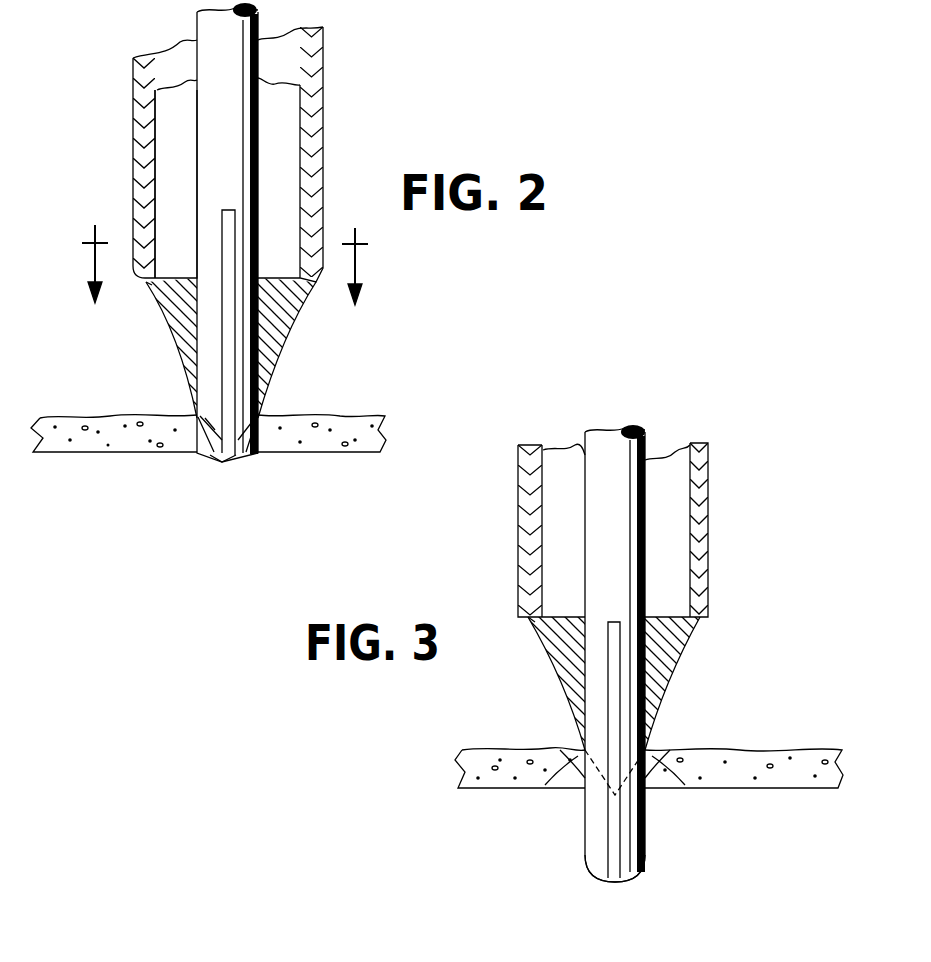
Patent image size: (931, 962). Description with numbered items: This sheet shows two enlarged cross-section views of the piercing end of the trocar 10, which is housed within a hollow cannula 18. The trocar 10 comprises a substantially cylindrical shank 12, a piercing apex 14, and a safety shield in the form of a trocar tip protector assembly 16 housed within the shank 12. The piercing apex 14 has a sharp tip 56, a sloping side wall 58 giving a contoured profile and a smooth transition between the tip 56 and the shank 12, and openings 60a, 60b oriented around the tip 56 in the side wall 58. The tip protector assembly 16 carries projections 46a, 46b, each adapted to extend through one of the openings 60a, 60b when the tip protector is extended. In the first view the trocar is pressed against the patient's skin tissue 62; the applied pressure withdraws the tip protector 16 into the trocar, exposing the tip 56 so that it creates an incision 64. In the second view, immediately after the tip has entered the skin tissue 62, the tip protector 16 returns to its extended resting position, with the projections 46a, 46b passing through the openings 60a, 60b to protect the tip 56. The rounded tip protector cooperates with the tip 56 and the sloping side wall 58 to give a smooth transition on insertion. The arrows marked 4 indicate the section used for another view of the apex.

In FIG. 2, the section line of FIG. 4 is at (225, 248).
In FIG. 2, the trocar 10 is at (150, 293).
In FIG. 3, the trocar 10 is at (540, 630).
In FIG. 2, the shank 12 is at (147, 110).
In FIG. 3, the shank 12 is at (532, 495).
In FIG. 2, the piercing apex 14 is at (303, 348).
In FIG. 3, the piercing apex 14 is at (698, 668).
In FIG. 2, the trocar tip protector assembly 16 is at (240, 157).
In FIG. 3, the trocar tip protector assembly 16 is at (630, 536).
In FIG. 2, the hollow cannula 18 is at (318, 82).
In FIG. 3, the hollow cannula 18 is at (703, 485).
In FIG. 3, the projection 46a is at (590, 858).
In FIG. 3, the projection 46b is at (645, 856).
In FIG. 2, the sharp tip 56 is at (222, 458).
In FIG. 2, the sloping side wall 58 is at (178, 322).
In FIG. 3, the sloping side wall 58 is at (567, 660).
In FIG. 2, the opening 60a is at (210, 418).
In FIG. 3, the opening 60a is at (545, 790).
In FIG. 2, the opening 60b is at (258, 440).
In FIG. 3, the opening 60b is at (683, 790).
In FIG. 2, the skin tissue 62 is at (87, 425).
In FIG. 2, the incision 64 is at (215, 452).